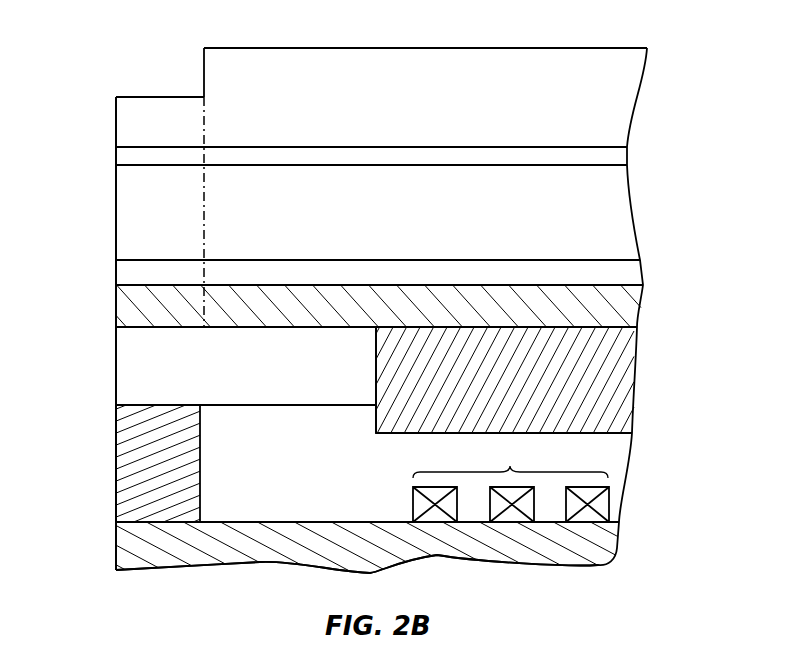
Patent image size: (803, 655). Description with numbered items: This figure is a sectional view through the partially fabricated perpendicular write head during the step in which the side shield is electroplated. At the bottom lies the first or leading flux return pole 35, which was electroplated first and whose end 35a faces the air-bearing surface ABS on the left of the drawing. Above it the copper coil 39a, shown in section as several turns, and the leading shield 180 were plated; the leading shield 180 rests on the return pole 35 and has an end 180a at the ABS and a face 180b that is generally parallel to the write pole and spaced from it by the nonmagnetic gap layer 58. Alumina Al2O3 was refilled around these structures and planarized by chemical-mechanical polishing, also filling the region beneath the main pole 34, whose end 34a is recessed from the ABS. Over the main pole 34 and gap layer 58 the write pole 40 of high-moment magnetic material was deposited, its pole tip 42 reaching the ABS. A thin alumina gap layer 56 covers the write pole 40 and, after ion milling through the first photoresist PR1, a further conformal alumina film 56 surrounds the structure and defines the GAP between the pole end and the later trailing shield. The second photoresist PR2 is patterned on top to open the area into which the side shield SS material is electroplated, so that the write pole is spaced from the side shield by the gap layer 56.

The side shield SS is at (128, 118).
The gap layer 56 is at (128, 157).
The second photoresist layer PR2 is at (617, 123).
The first photoresist layer PR1 is at (610, 233).
The gap GAP is at (628, 275).
The pole tip 42 is at (135, 308).
The write pole 40 is at (612, 315).
The air-bearing surface ABS is at (115, 345).
The nonmagnetic gap layer 58 is at (120, 378).
The alumina Al2O3 is at (127, 393).
The main pole 34 is at (627, 395).
The end of main pole 34a is at (376, 368).
The leading shield 180 is at (133, 463).
The face of leading shield 180b is at (190, 405).
The end of leading shield 180a is at (117, 493).
The coil 39a is at (511, 481).
The leading flux return pole 35 is at (128, 547).
The end of leading flux return pole 35a is at (116, 560).